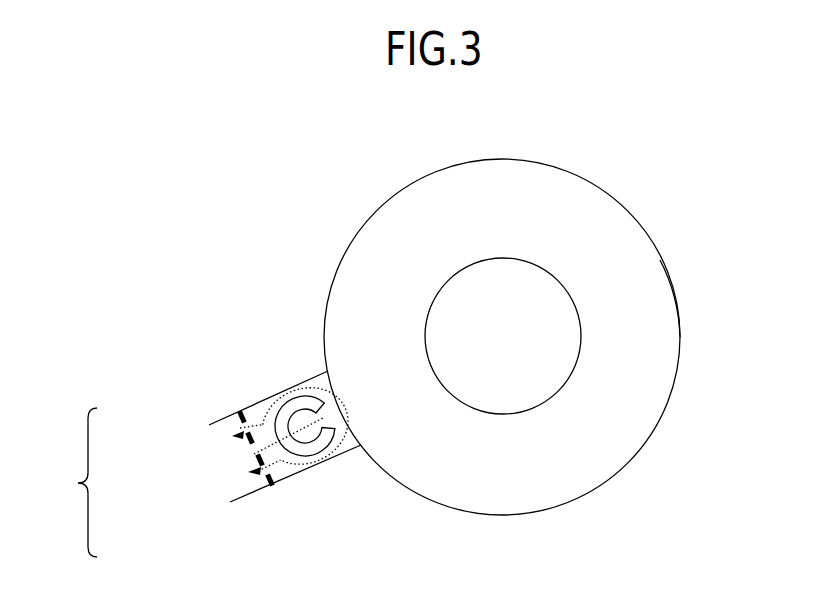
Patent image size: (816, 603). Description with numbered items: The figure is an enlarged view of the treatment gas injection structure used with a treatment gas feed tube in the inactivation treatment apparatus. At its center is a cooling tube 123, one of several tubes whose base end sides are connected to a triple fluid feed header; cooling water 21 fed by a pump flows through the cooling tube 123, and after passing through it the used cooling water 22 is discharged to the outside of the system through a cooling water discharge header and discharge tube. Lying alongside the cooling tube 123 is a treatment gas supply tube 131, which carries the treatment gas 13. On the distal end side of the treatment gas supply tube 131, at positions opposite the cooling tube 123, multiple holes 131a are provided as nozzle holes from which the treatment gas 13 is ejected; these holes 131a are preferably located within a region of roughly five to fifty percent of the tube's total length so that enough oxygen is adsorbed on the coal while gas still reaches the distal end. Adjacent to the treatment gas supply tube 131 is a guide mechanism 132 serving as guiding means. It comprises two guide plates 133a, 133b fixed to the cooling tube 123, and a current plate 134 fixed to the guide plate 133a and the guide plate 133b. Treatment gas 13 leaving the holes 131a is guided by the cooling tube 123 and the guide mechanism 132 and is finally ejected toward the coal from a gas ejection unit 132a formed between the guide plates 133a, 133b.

The treatment gas 13 is at (318, 390).
The cooling water 21 is at (627, 234).
The used cooling water 22 is at (522, 290).
The cooling tube 123 is at (676, 298).
The treatment gas supply tube 131 is at (285, 393).
The hole 131a is at (254, 454).
The guide mechanism 132 is at (67, 482).
The gas ejection unit 132a is at (266, 490).
The guide plate 133a is at (240, 412).
The guide plate 133b is at (281, 468).
The current plate 134 is at (240, 428).